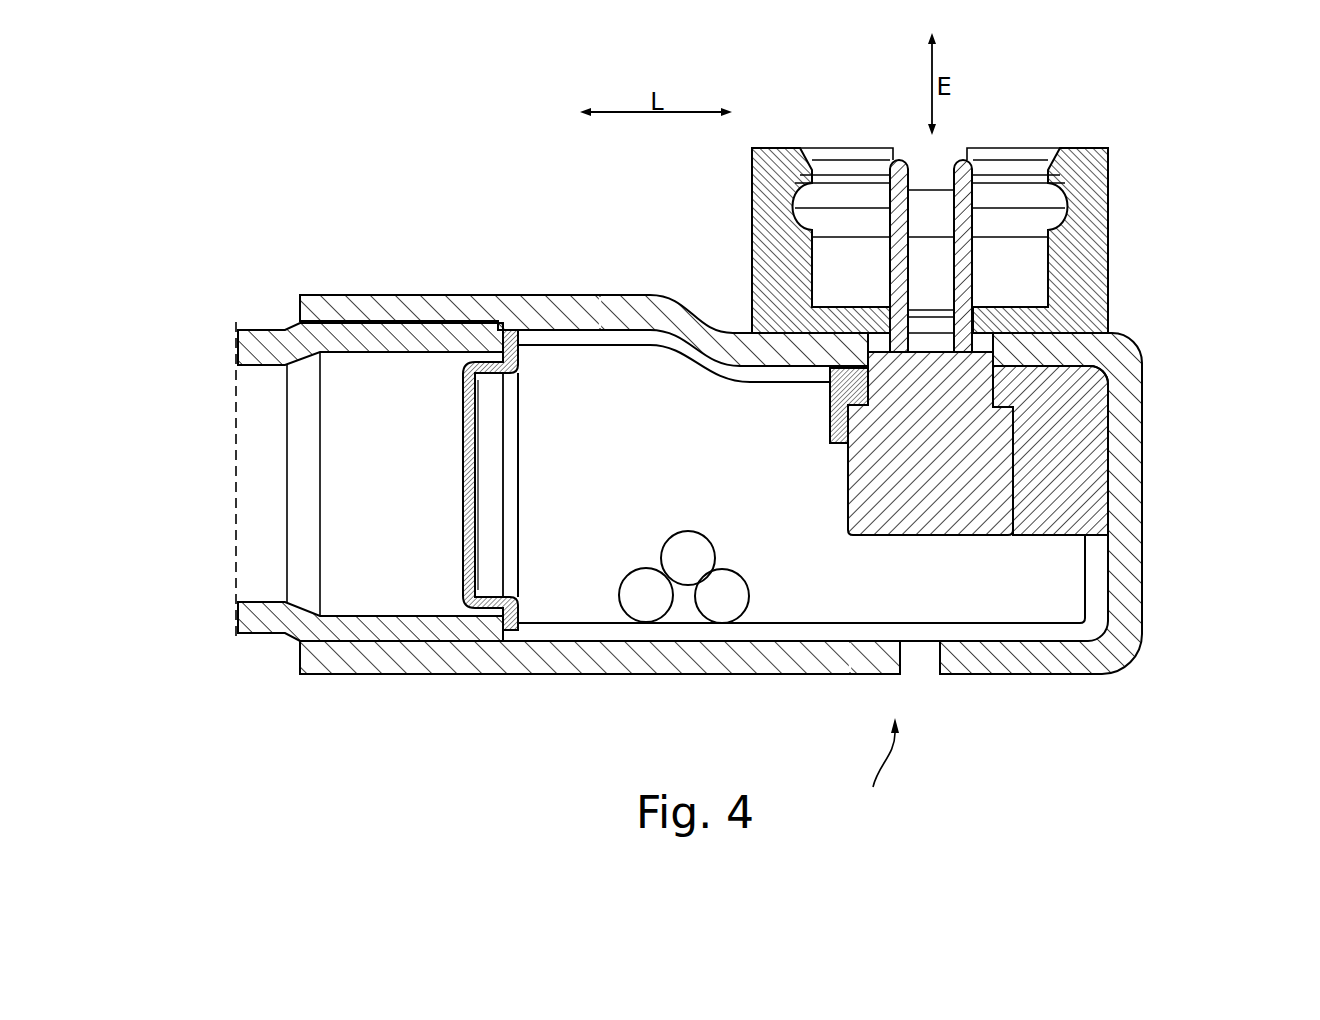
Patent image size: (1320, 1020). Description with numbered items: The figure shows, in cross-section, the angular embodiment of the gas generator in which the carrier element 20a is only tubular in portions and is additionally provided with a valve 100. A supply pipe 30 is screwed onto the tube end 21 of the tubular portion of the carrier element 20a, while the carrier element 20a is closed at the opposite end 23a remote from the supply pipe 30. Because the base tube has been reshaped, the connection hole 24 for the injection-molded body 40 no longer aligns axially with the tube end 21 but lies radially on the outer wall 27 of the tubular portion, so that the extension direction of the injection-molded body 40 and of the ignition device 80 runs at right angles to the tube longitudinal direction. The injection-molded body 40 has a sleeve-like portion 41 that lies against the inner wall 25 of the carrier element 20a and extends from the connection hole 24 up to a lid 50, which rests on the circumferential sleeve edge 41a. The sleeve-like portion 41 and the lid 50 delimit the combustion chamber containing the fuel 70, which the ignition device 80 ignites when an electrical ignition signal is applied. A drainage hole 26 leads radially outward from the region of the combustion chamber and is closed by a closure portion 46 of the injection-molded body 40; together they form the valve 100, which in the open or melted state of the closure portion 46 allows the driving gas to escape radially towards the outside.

The carrier element 20a is at (652, 676).
The tube end 21 is at (333, 662).
The end 23a is at (1127, 493).
The connection hole 24 is at (990, 338).
The inner wall 25 is at (636, 320).
The drainage hole 26 is at (893, 657).
The outer wall 27 is at (583, 312).
The supply pipe 30 is at (258, 504).
The injection-molded body 40 is at (1097, 412).
The sleeve-like portion 41 is at (737, 372).
The sleeve edge 41a is at (516, 330).
The closure portion 46 is at (927, 660).
The lid 50 is at (507, 445).
The fuel 70 is at (682, 550).
The ignition device 80 is at (888, 536).
The valve 100 is at (876, 768).